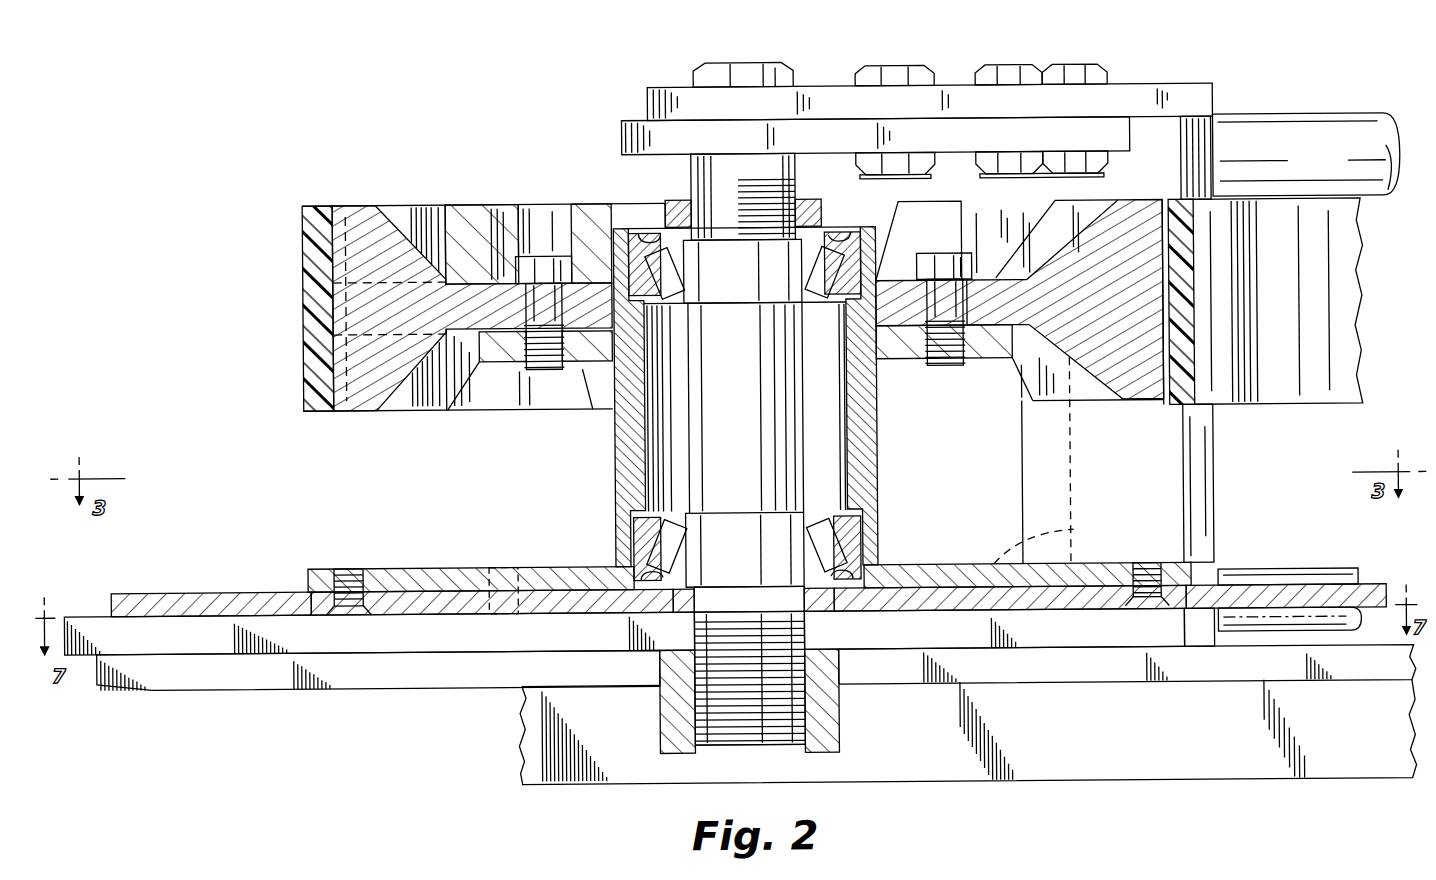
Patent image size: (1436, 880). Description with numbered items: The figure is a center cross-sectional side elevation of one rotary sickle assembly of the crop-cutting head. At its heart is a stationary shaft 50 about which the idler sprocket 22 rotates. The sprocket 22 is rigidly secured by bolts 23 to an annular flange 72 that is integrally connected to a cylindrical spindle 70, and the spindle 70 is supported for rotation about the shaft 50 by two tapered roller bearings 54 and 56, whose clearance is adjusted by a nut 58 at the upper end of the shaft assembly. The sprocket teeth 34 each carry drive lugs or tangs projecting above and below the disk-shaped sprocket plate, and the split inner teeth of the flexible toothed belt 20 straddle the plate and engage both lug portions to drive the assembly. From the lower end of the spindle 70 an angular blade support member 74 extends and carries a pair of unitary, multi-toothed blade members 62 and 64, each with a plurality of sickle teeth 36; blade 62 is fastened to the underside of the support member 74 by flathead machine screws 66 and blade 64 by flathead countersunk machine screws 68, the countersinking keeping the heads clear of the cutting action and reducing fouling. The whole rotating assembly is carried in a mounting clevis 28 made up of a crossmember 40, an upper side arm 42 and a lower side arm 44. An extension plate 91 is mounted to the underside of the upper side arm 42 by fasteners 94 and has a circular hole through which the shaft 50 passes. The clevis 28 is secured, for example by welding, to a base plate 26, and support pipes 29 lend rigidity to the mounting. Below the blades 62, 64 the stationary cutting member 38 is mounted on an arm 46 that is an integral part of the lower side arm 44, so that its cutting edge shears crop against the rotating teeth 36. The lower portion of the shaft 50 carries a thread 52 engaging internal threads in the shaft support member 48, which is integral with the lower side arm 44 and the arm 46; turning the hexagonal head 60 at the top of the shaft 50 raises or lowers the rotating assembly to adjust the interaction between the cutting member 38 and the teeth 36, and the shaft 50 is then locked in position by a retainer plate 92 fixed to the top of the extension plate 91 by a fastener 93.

The toothed belt 20 is at (320, 206).
The idler sprocket 22 is at (995, 278).
The bolts 23 is at (560, 268).
The base plate 26 is at (1063, 782).
The mounting clevis 28 is at (1205, 80).
The support pipes 29 is at (1300, 120).
The sprocket teeth 34 is at (432, 224).
The sickle teeth 36 is at (165, 590).
The stationary cutting member 38 is at (188, 640).
The crossmember 40 is at (1045, 482).
The upper side arm 42 is at (1140, 87).
The lower side arm 44 is at (1058, 666).
The arm 46 is at (365, 688).
The shaft support member 48 is at (670, 724).
The stationary shaft 50 is at (758, 391).
The thread 52 is at (785, 702).
The roller bearing 54 is at (802, 551).
The roller bearing 56 is at (802, 276).
The nut 58 is at (672, 208).
The nut 60 is at (793, 70).
The blade member 62 is at (576, 612).
The blade member 64 is at (1096, 612).
The flathead machine screws 66 is at (344, 568).
The flathead countersunk machine screws 68 is at (1143, 566).
The cylindrical spindle 70 is at (880, 467).
The annular flange 72 is at (583, 366).
The blade support member 74 is at (412, 567).
The extension plate 91 is at (623, 133).
The retainer plate 92 is at (652, 86).
The fastener 93 is at (900, 66).
The fasteners 94 is at (1015, 66).